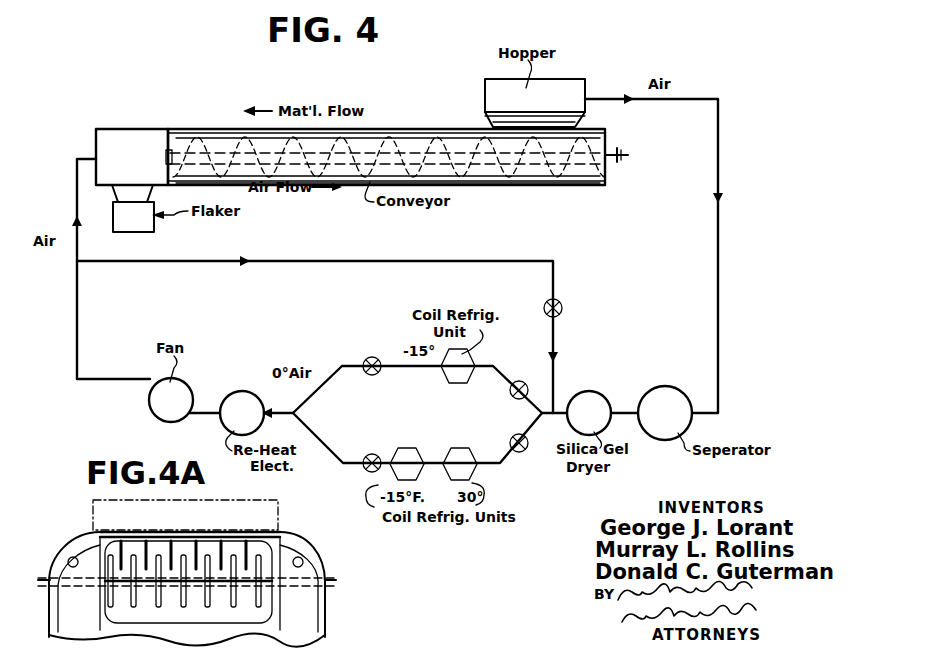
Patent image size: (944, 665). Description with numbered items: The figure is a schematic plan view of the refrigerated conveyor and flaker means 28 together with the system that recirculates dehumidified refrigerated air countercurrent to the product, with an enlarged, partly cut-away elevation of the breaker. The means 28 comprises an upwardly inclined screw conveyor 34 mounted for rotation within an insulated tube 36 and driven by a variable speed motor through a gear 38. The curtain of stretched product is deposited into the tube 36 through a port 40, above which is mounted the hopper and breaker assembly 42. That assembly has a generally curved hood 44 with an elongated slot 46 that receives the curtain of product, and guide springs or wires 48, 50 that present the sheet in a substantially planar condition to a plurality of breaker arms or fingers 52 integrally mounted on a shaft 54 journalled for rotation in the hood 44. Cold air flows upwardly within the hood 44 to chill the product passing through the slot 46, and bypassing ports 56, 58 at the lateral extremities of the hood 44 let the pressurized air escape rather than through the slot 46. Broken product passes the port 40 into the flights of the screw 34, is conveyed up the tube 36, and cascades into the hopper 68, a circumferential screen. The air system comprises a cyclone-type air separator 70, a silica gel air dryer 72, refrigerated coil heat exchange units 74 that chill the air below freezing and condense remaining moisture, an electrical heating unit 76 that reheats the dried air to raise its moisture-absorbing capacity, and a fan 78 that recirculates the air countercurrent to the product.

In FIG. 4, the refrigerated conveyor and flaker means 28 is at (438, 131).
In FIG. 4, the screw conveyor 34 is at (198, 130).
In FIG. 4, the insulated tube 36 is at (542, 185).
In FIG. 4, the gear 38 is at (623, 152).
In FIG. 4, the port 40 is at (562, 120).
In FIG. 4, the hopper and breaker assembly 42 is at (582, 84).
In FIG. 4A, the hopper and breaker assembly 42 is at (94, 512).
In FIG. 4A, the hood 44 is at (294, 540).
In FIG. 4A, the elongated slot 46 is at (142, 538).
In FIG. 4A, the guide spring or wire 48 is at (170, 550).
In FIG. 4A, the guide spring or wire 50 is at (220, 548).
In FIG. 4A, the breaker arms or fingers 52 is at (240, 602).
In FIG. 4A, the shaft 54 is at (110, 584).
In FIG. 4A, the bypassing port 56 is at (68, 562).
In FIG. 4A, the bypassing port 58 is at (302, 560).
In FIG. 4, the hopper 68 is at (128, 128).
In FIG. 4, the air separator 70 is at (676, 394).
In FIG. 4, the silica gel air dryer 72 is at (599, 394).
In FIG. 4, the refrigerated coil heat exchange units 74 is at (456, 454).
In FIG. 4, the electrical heating unit 76 is at (226, 398).
In FIG. 4, the fan 78 is at (156, 402).